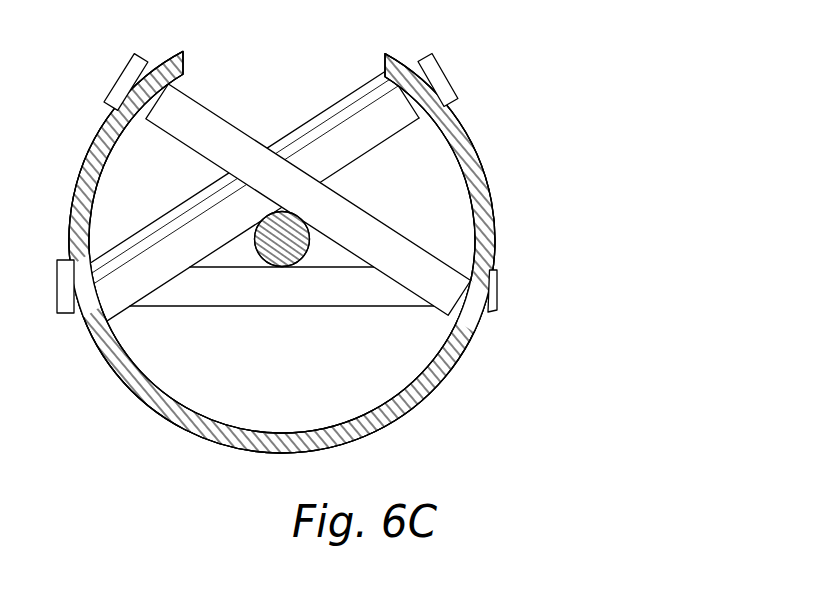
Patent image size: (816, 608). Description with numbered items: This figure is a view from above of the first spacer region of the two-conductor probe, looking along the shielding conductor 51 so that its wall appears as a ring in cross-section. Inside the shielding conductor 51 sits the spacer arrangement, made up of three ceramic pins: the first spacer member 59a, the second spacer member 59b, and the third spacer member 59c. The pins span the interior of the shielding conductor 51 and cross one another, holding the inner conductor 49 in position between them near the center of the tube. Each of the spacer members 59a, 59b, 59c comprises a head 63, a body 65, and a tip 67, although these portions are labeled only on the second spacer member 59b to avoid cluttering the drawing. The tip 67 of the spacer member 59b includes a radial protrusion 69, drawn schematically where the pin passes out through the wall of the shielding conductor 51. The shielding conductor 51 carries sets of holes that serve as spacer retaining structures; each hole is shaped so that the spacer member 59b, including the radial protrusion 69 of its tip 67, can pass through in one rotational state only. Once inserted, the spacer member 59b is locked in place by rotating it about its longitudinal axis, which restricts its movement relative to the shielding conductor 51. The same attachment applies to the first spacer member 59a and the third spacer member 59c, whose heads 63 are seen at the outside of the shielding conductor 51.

The rod 49 is at (300, 227).
The shielding conductor 51 is at (93, 145).
The first spacer member 59a is at (319, 306).
The second spacer member 59b is at (368, 135).
The third spacer member 59c is at (207, 132).
The head 63 is at (437, 72).
The body 65 is at (190, 217).
The tip 67 is at (80, 318).
The radial protrusion 69 is at (78, 301).